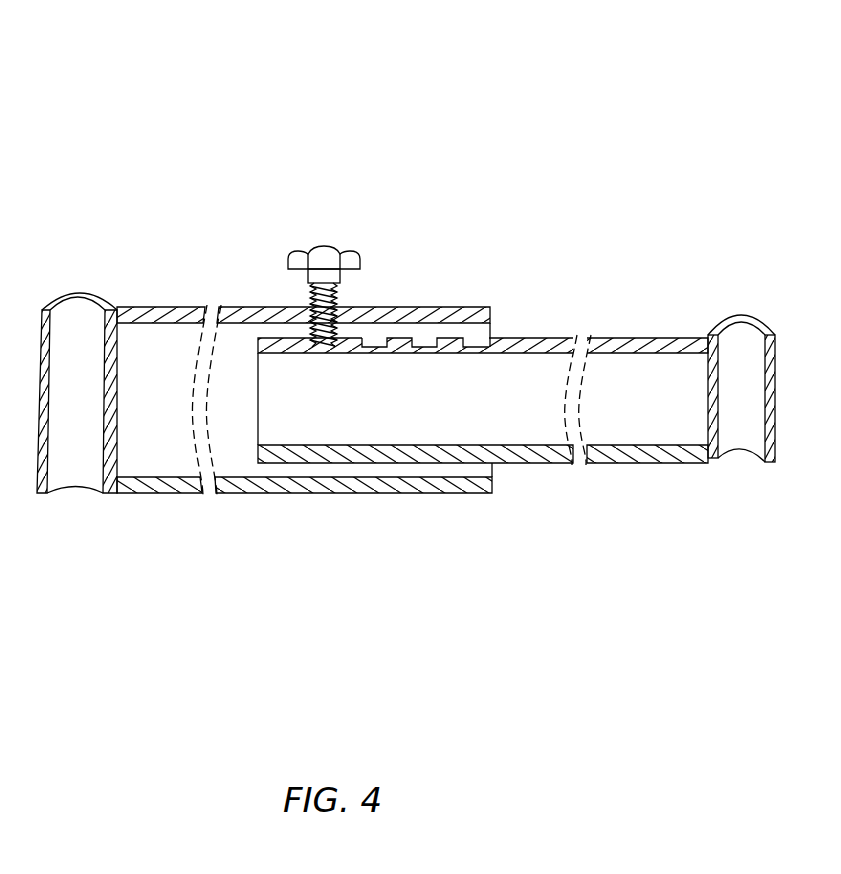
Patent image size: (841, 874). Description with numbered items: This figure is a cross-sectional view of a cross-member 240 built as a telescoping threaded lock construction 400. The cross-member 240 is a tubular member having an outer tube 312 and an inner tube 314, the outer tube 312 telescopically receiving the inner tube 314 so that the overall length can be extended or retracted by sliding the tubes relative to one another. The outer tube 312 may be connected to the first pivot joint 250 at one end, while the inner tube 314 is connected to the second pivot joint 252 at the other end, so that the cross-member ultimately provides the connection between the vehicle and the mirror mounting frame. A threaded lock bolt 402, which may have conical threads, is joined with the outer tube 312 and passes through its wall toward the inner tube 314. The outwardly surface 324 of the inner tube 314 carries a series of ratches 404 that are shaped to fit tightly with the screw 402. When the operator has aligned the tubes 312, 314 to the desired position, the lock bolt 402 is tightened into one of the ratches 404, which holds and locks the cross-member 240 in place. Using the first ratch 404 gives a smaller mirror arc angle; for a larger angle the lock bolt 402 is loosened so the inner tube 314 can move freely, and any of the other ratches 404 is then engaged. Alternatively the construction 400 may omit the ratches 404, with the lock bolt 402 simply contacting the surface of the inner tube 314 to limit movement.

The telescoping threaded lock construction 400 is at (115, 148).
The cross-member 240 is at (400, 582).
The outer tube 312 is at (240, 307).
The inner tube 314 is at (673, 348).
The outwardly surface 324 is at (553, 338).
The ratches 404 is at (373, 341).
The threaded lock bolt 402 is at (318, 226).
The first pivot joint 250 is at (49, 495).
The second pivot joint 252 is at (762, 458).